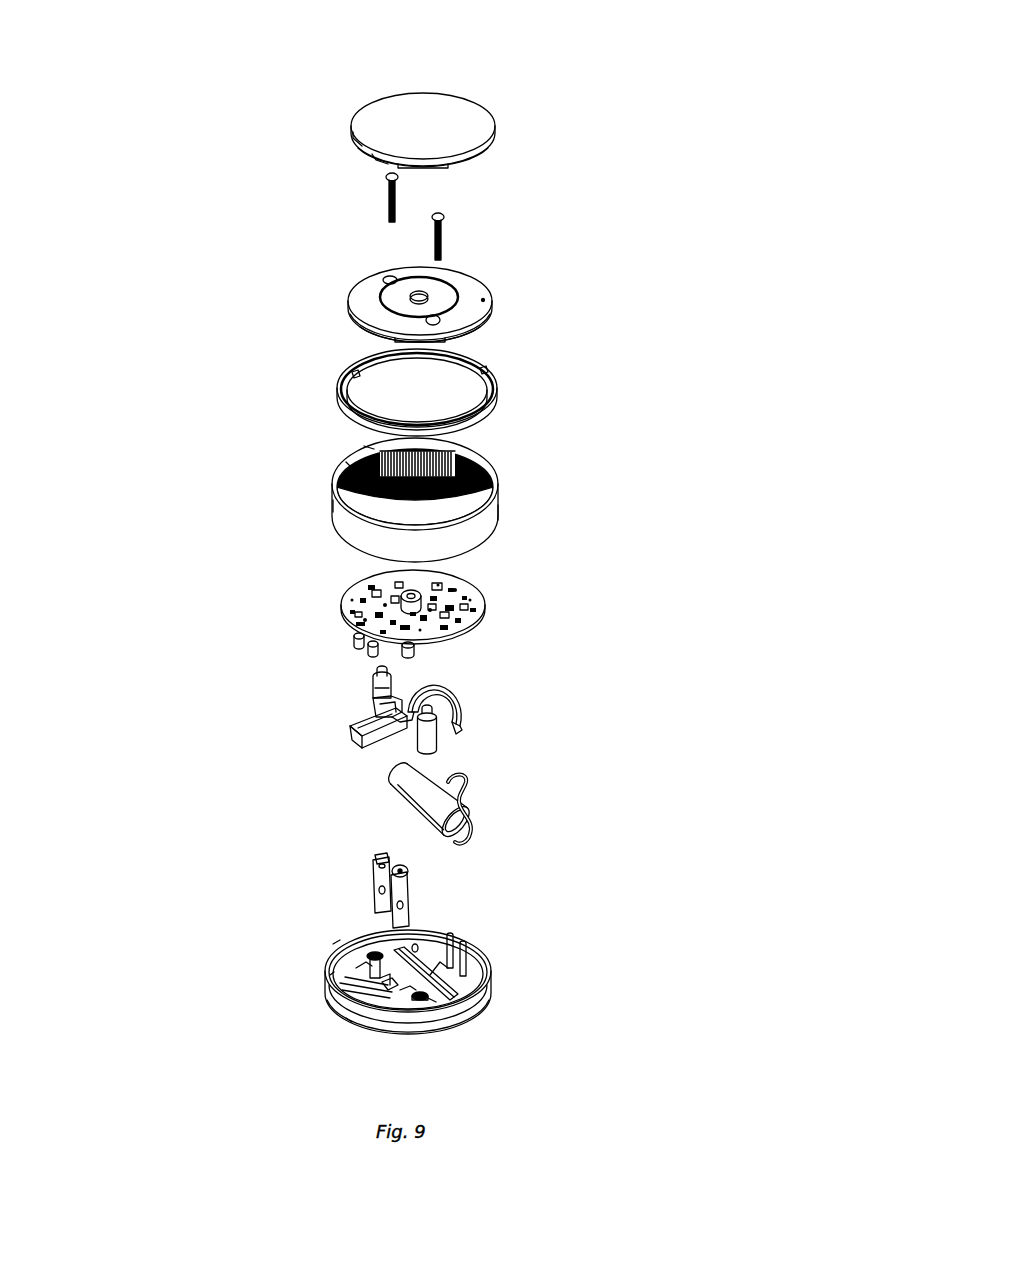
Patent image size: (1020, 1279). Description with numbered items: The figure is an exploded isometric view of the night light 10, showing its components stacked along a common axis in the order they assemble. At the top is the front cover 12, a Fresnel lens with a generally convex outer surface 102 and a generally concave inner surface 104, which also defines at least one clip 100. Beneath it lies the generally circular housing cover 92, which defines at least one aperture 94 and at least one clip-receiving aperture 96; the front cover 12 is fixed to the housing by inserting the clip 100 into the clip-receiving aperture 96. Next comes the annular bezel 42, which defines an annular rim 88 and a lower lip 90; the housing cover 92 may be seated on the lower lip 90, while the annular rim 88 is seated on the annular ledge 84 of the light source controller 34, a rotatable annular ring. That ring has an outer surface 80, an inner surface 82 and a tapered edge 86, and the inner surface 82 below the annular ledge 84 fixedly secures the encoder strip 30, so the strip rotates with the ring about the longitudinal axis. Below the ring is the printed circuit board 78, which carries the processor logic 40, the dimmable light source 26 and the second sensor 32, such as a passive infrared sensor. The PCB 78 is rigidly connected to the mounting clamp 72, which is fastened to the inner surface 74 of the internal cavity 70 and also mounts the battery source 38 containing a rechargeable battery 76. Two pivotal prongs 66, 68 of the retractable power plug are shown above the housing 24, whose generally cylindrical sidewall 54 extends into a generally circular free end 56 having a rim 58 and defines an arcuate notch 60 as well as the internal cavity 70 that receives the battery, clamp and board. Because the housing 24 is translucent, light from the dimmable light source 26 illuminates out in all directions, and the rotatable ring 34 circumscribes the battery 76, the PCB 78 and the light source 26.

The night light 10 is at (266, 93).
The front cover 12 is at (492, 118).
The generally convex outer surface 102 is at (418, 116).
The clip 100 is at (350, 153).
The generally concave inner surface 104 is at (460, 166).
The generally circular housing cover 92 is at (486, 292).
The aperture 94 is at (412, 291).
The clip-receiving aperture 96 is at (346, 324).
The bezel 42 is at (498, 392).
The annular rim 88 is at (489, 362).
The lower lip 90 is at (394, 369).
The light source controller 34 is at (469, 474).
The encoder strip 30 is at (452, 453).
The outer surface 80 is at (333, 510).
The inner surface 82 is at (349, 466).
The annular ledge 84 is at (370, 446).
The tapered edge 86 is at (499, 514).
The printed circuit board 78 is at (409, 591).
The processor logic 40 is at (612, 598).
The dimmable light source 26 is at (410, 590).
The second sensor 32 is at (266, 580).
The mounting clamp 72 is at (362, 718).
The battery source 38 is at (534, 799).
The battery 76 is at (478, 835).
The prong 66 is at (375, 880).
The prong 68 is at (403, 902).
The housing 24 is at (505, 982).
The generally cylindrical sidewall 54 is at (612, 918).
The generally circular free end 56 is at (333, 944).
The rim 58 is at (331, 975).
The arcuate notch 60 is at (346, 1018).
The inner surface 74 is at (424, 1000).
The internal cavity 70 is at (432, 1002).